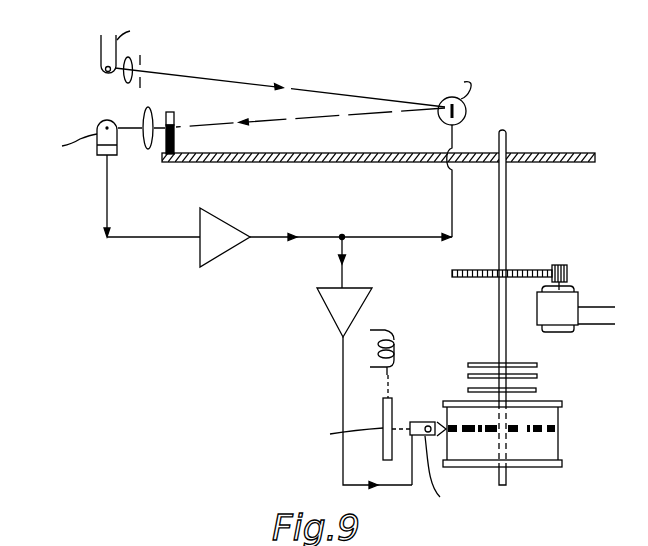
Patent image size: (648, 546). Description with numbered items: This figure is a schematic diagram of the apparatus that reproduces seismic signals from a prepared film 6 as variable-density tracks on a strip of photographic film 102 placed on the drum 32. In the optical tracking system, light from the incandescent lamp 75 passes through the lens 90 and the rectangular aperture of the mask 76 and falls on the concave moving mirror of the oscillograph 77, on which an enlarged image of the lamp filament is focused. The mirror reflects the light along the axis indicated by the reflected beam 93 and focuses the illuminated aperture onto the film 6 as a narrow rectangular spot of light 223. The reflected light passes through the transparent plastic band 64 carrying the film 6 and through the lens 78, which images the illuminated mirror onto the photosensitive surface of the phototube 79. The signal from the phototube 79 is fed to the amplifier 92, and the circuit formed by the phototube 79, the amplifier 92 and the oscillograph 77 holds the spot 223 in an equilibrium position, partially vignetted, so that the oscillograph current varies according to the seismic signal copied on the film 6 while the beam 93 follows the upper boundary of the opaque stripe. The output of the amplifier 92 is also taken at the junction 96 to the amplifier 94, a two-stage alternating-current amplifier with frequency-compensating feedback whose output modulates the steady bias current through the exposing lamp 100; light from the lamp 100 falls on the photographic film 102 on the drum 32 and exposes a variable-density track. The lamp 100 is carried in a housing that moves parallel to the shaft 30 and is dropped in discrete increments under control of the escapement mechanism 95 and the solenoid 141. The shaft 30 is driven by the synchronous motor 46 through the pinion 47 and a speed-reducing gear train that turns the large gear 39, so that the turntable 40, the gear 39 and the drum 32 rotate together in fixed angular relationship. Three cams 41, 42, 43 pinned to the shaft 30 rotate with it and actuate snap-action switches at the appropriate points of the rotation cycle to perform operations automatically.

The incandescent lamp 75 is at (101, 50).
The lens 90 is at (123, 77).
The aperture mask 76 is at (141, 64).
The rectangular spot of light 223 is at (162, 116).
The reflected light beam 93 is at (306, 122).
The transparent plastic band 64 is at (175, 114).
The film 6 is at (175, 141).
The lens 78 is at (143, 120).
The turntable 40 is at (284, 163).
The phototube 79 is at (110, 158).
The amplifier 92 is at (232, 223).
The junction conductor 96 is at (345, 236).
The oscillograph 77 is at (467, 114).
The shaft 30 is at (507, 200).
The large gear 39 is at (522, 268).
The pinion 47 is at (570, 272).
The synchronous motor 46 is at (565, 306).
The cam 41 is at (538, 364).
The cam 42 is at (540, 376).
The cam 43 is at (540, 391).
The drum 32 is at (531, 468).
The photographic film 102 is at (562, 442).
The amplifier 94 is at (331, 316).
The solenoid 141 is at (394, 340).
The escapement mechanism 95 is at (383, 412).
The exposing lamp 100 is at (413, 421).